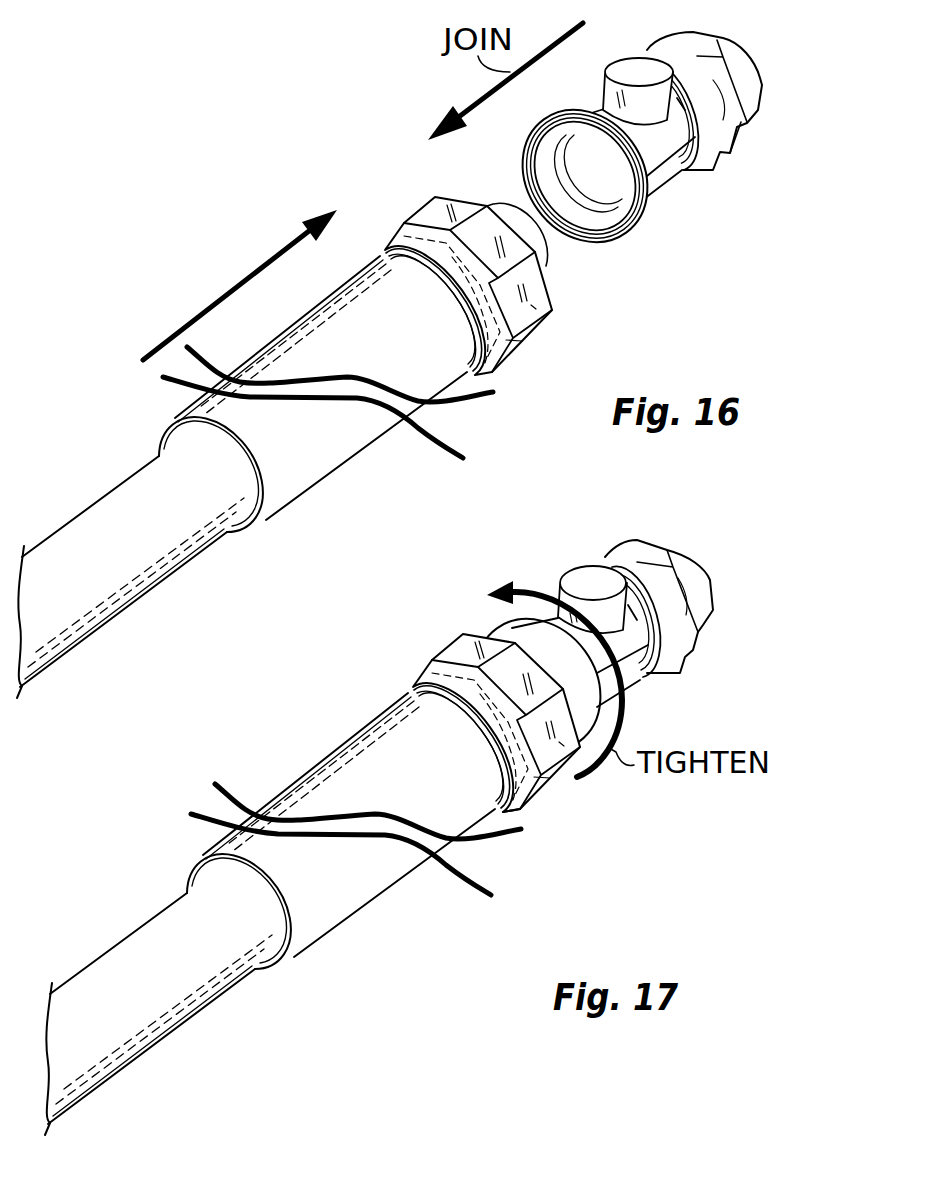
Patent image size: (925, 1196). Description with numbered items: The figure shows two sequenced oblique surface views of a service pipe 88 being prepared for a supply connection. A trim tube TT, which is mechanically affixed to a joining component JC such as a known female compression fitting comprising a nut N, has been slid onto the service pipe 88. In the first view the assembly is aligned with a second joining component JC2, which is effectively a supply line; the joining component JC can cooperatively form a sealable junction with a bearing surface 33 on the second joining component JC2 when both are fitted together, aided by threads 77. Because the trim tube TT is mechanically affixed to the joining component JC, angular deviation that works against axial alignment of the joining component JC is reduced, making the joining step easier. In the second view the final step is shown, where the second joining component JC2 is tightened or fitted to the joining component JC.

In FIG. 16, the service pipe 88 is at (140, 557).
In FIG. 17, the service pipe 88 is at (168, 994).
In FIG. 16, the trim tube TT is at (328, 388).
In FIG. 17, the trim tube TT is at (356, 825).
In FIG. 16, the threads 77 is at (638, 220).
In FIG. 16, the bearing surface 33 is at (602, 234).
In FIG. 16, the second joining component JC2 is at (697, 190).
In FIG. 17, the second joining component JC2 is at (581, 653).
In FIG. 17, the nut N is at (445, 657).
In FIG. 17, the joining component JC is at (548, 815).